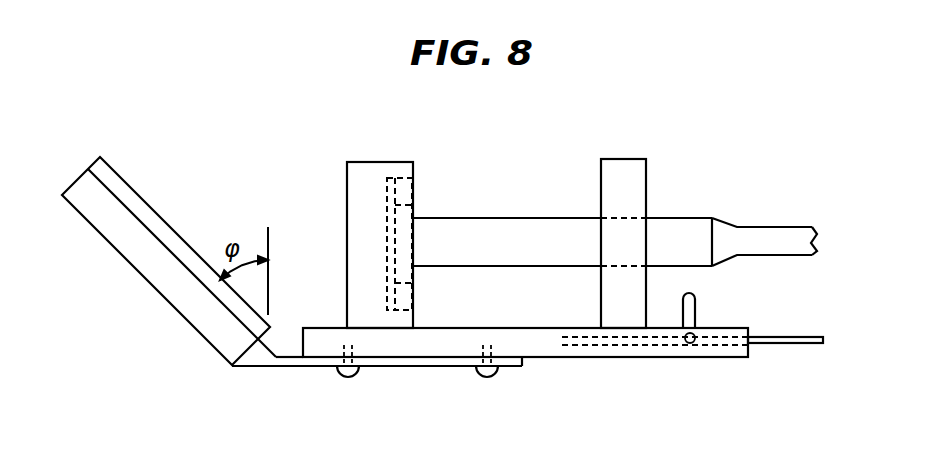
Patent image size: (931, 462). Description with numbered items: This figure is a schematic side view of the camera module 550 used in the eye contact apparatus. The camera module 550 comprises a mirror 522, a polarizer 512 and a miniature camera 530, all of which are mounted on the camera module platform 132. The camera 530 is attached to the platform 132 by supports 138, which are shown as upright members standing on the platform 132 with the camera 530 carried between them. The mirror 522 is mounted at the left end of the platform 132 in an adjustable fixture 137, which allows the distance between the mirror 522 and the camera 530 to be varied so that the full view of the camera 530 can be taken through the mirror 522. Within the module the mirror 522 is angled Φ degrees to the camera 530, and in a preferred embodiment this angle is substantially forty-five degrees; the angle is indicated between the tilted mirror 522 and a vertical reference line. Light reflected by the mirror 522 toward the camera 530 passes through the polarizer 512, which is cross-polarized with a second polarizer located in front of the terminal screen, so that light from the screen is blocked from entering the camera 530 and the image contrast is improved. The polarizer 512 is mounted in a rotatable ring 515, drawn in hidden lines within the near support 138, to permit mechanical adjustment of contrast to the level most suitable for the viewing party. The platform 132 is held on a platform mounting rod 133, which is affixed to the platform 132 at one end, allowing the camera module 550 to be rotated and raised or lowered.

The mirror 522 is at (150, 207).
The camera module 550 is at (322, 124).
The polarizer 512 is at (386, 232).
The rotatable ring 515 is at (403, 187).
The supports 138 is at (346, 218).
The miniature camera 530 is at (525, 233).
The platform mounting rod 133 is at (695, 310).
The camera module platform 132 is at (530, 348).
The adjustable fixture 137 is at (257, 355).